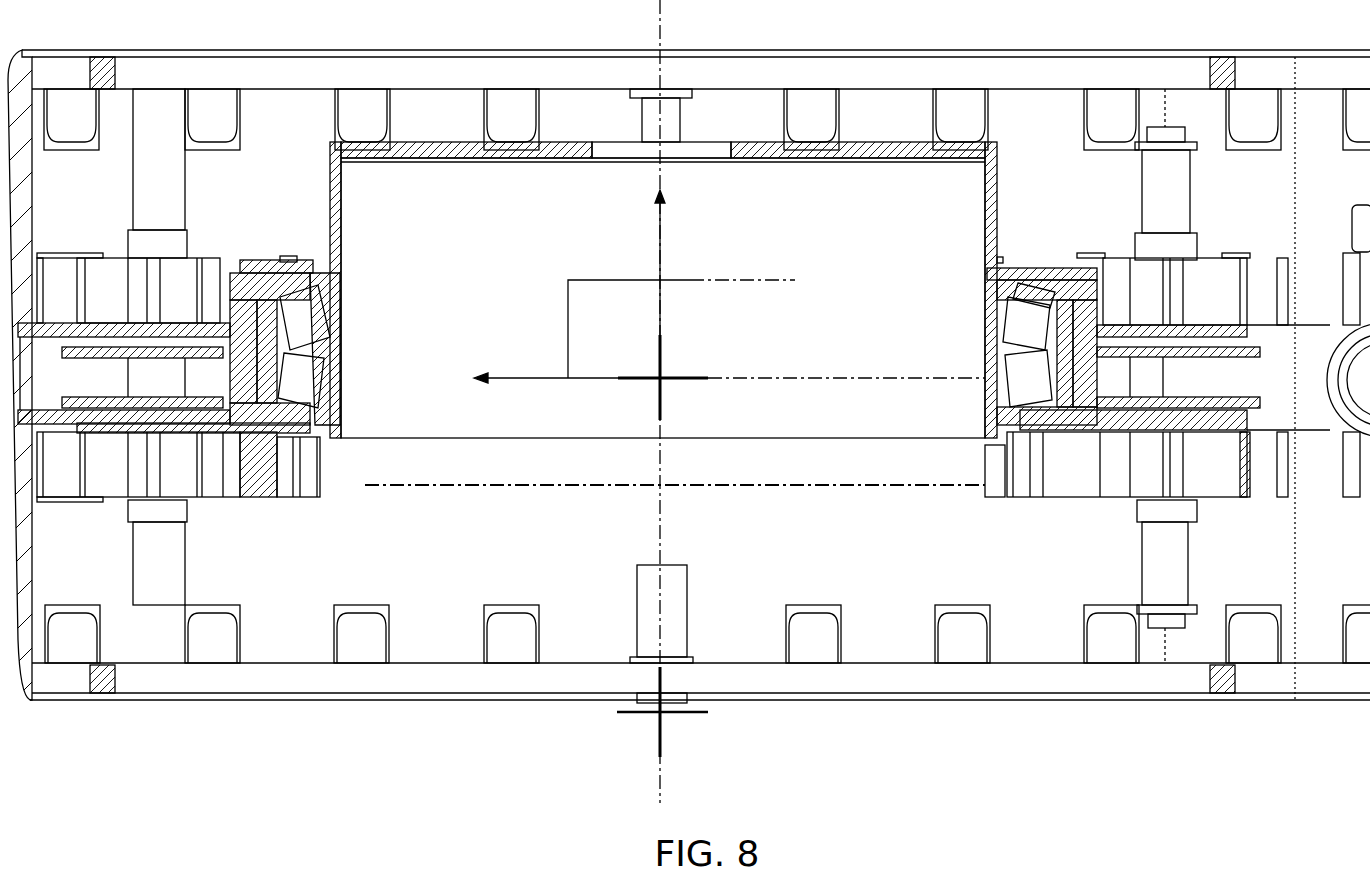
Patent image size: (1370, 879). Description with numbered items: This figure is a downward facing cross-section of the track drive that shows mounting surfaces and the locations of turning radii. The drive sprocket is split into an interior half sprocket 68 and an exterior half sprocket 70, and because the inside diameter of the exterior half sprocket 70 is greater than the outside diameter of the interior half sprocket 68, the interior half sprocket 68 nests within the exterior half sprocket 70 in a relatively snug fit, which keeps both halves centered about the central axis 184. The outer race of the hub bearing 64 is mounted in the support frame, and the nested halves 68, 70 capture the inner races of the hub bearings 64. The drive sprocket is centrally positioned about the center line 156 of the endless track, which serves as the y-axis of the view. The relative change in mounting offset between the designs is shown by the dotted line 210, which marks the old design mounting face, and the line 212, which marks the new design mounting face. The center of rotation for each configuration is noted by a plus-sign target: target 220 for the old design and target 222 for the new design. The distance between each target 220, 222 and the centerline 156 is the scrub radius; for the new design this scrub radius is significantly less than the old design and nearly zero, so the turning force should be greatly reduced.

The exterior half sprocket 70 is at (328, 190).
The hub bearing 64 is at (325, 272).
The interior half sprocket 68 is at (337, 440).
The line (new design mounting face) 212 is at (838, 158).
The target (new design center of rotation) 222 is at (680, 378).
The center line of the endless track 156 is at (900, 378).
The dotted line (old design mounting face) 210 is at (740, 488).
The target (old design center of rotation) 220 is at (687, 717).
The central axis 184 is at (669, 788).